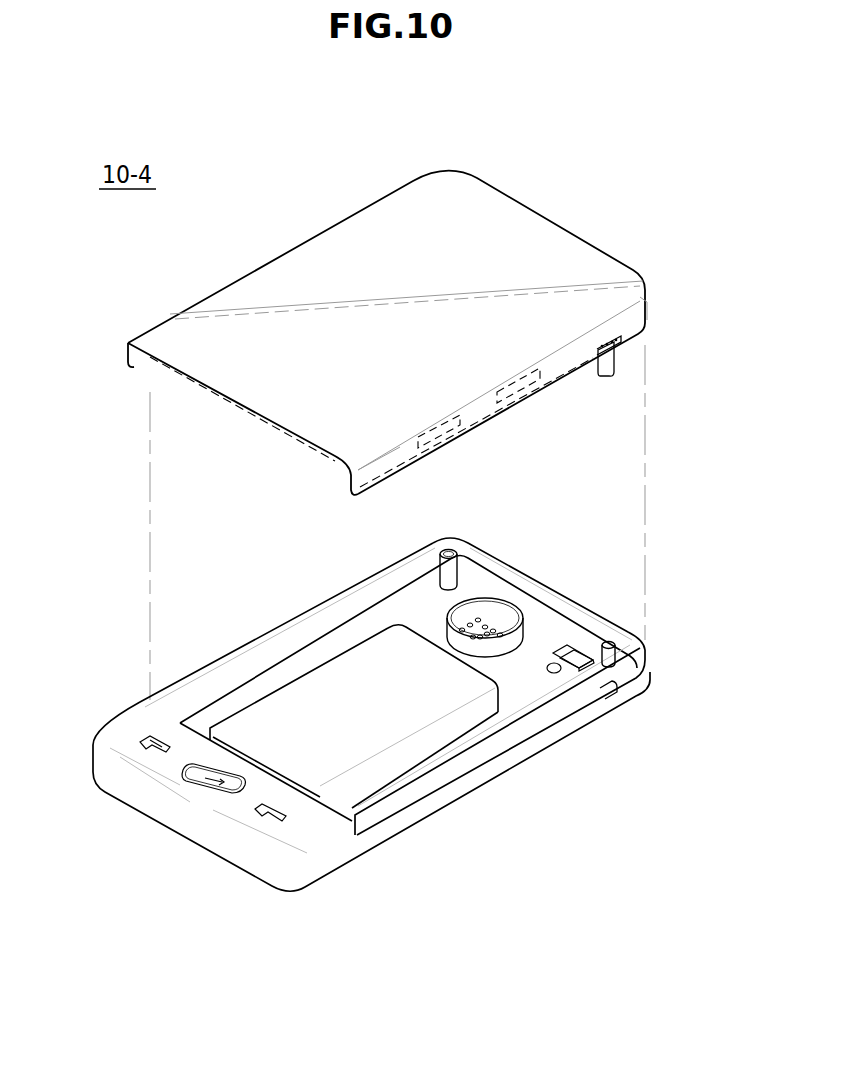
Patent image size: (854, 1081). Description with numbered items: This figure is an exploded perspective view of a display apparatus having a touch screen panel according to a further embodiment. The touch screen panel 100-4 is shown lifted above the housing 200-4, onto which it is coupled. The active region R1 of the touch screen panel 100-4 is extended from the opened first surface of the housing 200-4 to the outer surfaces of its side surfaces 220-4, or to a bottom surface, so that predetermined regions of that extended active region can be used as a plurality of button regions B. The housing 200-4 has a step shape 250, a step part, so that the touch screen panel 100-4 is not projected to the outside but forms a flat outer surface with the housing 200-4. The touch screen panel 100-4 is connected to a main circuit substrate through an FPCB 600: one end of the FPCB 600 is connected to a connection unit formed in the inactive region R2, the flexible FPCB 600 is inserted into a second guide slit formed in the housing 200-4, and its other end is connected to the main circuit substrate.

The touch screen panel 100-4 is at (588, 215).
The active region R1 is at (521, 237).
The inactive region R2 is at (412, 453).
The button regions B is at (470, 435).
The FPCB 600 is at (609, 363).
The housing 200-4 is at (165, 862).
The side surfaces 220-4 is at (545, 737).
The step shape 250 is at (483, 760).